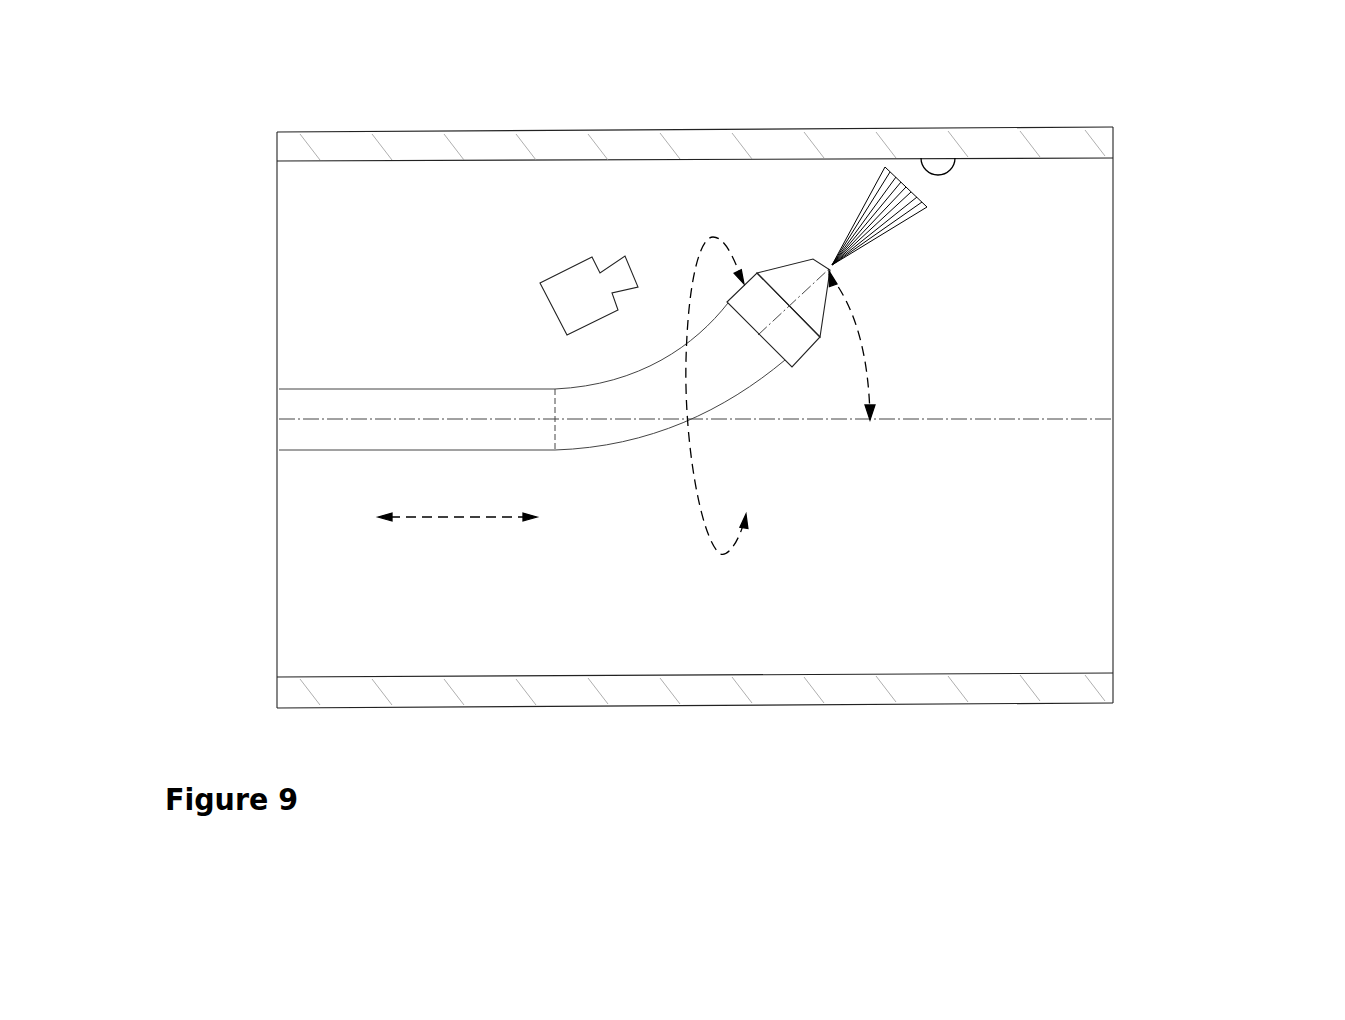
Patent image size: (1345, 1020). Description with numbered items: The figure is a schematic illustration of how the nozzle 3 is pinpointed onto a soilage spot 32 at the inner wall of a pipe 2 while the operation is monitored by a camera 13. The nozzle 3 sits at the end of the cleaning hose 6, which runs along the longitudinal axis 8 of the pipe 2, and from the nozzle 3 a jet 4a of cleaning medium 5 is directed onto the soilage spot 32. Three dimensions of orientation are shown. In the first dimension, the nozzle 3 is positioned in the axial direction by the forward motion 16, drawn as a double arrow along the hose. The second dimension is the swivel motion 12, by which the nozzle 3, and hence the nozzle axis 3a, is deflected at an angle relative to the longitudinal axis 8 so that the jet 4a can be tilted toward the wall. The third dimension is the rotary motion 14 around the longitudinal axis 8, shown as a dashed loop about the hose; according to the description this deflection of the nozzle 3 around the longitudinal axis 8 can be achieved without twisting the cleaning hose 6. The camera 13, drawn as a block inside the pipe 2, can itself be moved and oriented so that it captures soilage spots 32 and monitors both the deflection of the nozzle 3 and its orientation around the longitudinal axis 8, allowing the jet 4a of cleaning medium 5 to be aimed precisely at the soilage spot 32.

The pipe 2 is at (508, 148).
The nozzle 3 is at (728, 219).
The nozzle axis 3a is at (807, 283).
The jet 4a is at (885, 213).
The cleaning medium 5 is at (841, 168).
The cleaning hose 6 is at (422, 399).
The longitudinal axis 8 is at (1078, 413).
The swivel motion 12 is at (870, 363).
The camera 13 is at (568, 292).
The rotary motion 14 is at (719, 553).
The forward motion 16 is at (498, 517).
The soilage spot 32 is at (951, 168).